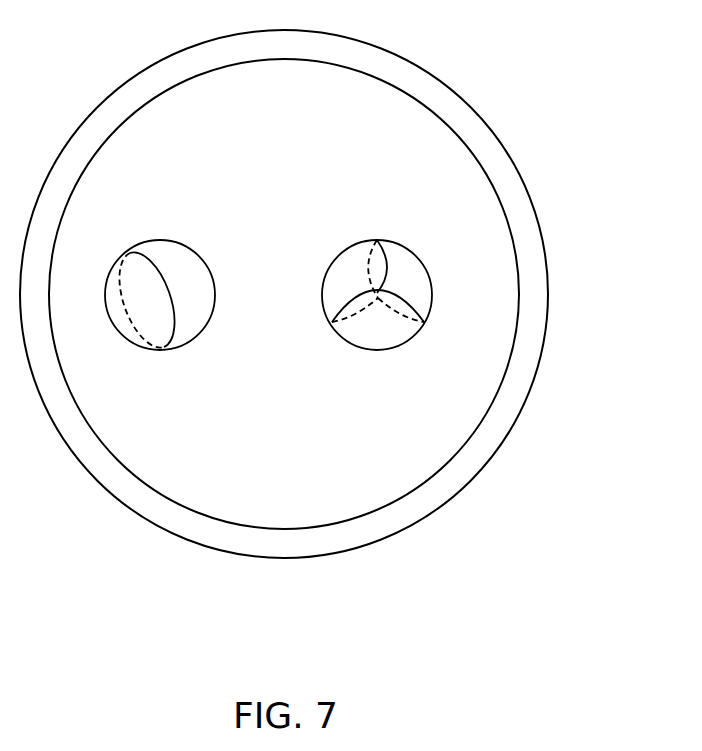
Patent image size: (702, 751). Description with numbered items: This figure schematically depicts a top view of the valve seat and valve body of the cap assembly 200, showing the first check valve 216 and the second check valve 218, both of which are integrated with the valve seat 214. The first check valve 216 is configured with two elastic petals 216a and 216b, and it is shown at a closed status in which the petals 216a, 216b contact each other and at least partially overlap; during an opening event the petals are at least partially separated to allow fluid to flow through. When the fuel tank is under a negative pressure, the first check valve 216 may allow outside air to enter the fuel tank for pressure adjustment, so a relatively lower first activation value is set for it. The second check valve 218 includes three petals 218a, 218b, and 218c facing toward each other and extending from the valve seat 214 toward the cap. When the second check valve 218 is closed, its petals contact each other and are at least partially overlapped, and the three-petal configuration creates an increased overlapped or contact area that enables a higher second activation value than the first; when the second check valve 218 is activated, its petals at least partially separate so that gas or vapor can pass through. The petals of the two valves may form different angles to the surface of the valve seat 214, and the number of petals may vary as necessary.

The cap assembly 200 is at (340, 294).
The valve seat 214 is at (520, 372).
The first check valve 216 is at (180, 319).
The elastic petal 216a is at (120, 317).
The elastic petal 216b is at (183, 278).
The second check valve 218 is at (381, 294).
The petal 218a is at (408, 275).
The petal 218b is at (348, 332).
The petal 218c is at (347, 268).